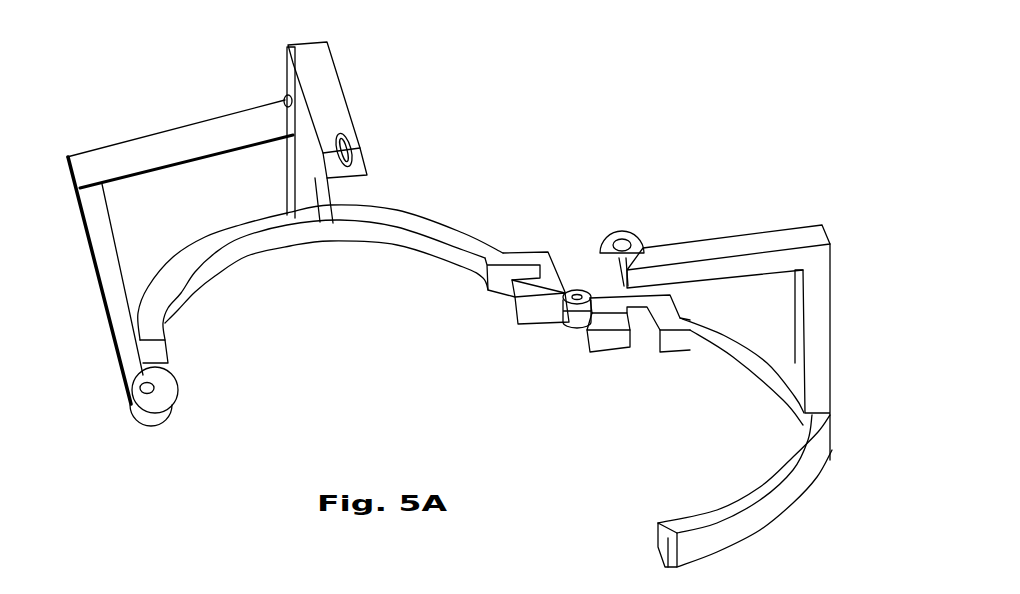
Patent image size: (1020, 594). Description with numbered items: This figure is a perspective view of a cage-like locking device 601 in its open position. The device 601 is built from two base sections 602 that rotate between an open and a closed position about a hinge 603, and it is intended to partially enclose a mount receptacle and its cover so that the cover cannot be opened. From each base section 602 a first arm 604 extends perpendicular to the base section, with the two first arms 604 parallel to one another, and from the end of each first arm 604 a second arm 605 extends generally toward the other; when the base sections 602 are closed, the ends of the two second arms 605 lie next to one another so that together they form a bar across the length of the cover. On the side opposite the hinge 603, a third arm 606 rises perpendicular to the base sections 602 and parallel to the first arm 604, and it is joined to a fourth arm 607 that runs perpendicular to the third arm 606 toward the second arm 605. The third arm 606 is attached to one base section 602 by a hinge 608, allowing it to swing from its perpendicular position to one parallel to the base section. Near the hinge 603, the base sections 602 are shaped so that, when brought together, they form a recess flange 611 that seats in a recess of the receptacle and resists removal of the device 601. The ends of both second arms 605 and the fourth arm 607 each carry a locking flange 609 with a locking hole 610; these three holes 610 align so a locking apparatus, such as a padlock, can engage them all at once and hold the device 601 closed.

The cage-like locking device 601 is at (611, 118).
The base section 602 is at (442, 250).
The hinge 603 is at (577, 290).
The first arm 604 is at (303, 167).
The second arm 605 is at (340, 83).
The third arm 606 is at (93, 283).
The fourth arm 607 is at (137, 148).
The hinge 608 is at (167, 403).
The locking flange 609 is at (290, 89).
The locking hole 610 is at (282, 106).
The recess flange 611 is at (585, 334).